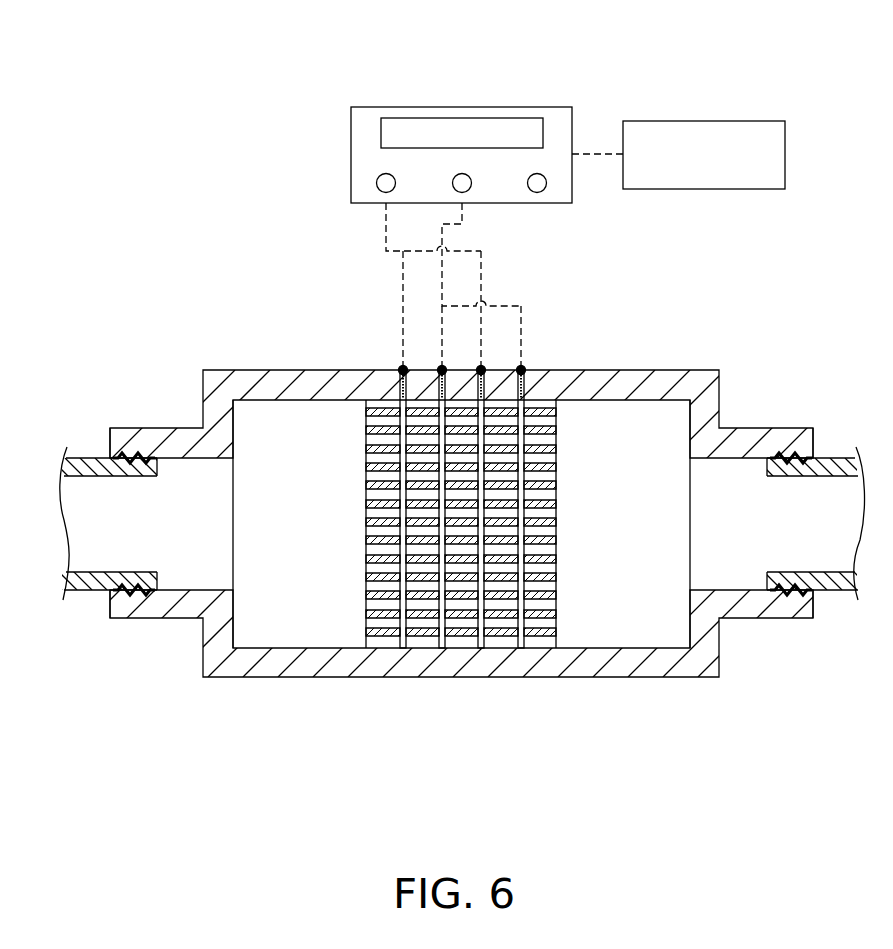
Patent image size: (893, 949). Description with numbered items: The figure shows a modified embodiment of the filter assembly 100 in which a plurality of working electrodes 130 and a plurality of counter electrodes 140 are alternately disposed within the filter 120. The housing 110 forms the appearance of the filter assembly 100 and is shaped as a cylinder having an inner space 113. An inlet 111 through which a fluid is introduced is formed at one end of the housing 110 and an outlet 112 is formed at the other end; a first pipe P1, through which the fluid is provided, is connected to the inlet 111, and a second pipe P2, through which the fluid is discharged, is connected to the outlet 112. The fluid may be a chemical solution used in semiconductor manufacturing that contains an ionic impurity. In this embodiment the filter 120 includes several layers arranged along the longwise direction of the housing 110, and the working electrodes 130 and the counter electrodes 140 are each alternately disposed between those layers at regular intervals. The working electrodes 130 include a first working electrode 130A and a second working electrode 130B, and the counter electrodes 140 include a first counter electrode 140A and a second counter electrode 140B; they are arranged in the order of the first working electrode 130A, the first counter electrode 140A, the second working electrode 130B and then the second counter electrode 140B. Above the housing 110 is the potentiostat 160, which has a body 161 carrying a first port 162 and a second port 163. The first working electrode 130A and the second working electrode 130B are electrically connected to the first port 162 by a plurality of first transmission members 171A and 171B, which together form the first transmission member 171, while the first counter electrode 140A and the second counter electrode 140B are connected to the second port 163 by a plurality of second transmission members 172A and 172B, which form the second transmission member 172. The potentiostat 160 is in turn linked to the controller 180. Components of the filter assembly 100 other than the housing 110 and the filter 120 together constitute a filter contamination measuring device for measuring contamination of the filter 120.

The filter assembly 100 is at (638, 752).
The housing 110 is at (260, 662).
The inlet 111 is at (158, 615).
The outlet 112 is at (763, 613).
The inner space 113 is at (324, 614).
The filter 120 is at (560, 617).
The working electrodes 130 is at (448, 730).
The first working electrode 130A is at (402, 622).
The second working electrode 130B is at (477, 628).
The counter electrodes 140 is at (573, 730).
The first counter electrode 140A is at (443, 587).
The second counter electrode 140B is at (522, 587).
The potentiostat 160 is at (378, 93).
The body 161 is at (528, 106).
The first port 162 is at (377, 183).
The second port 163 is at (462, 174).
The first transmission member 171 is at (281, 255).
The first transmission member 171A is at (481, 269).
The first transmission member 171B is at (403, 268).
The second transmission member 172 is at (632, 255).
The second transmission member 172A is at (442, 335).
The second transmission member 172B is at (520, 333).
The controller 180 is at (742, 120).
The first pipe P1 is at (92, 582).
The second pipe P2 is at (837, 590).